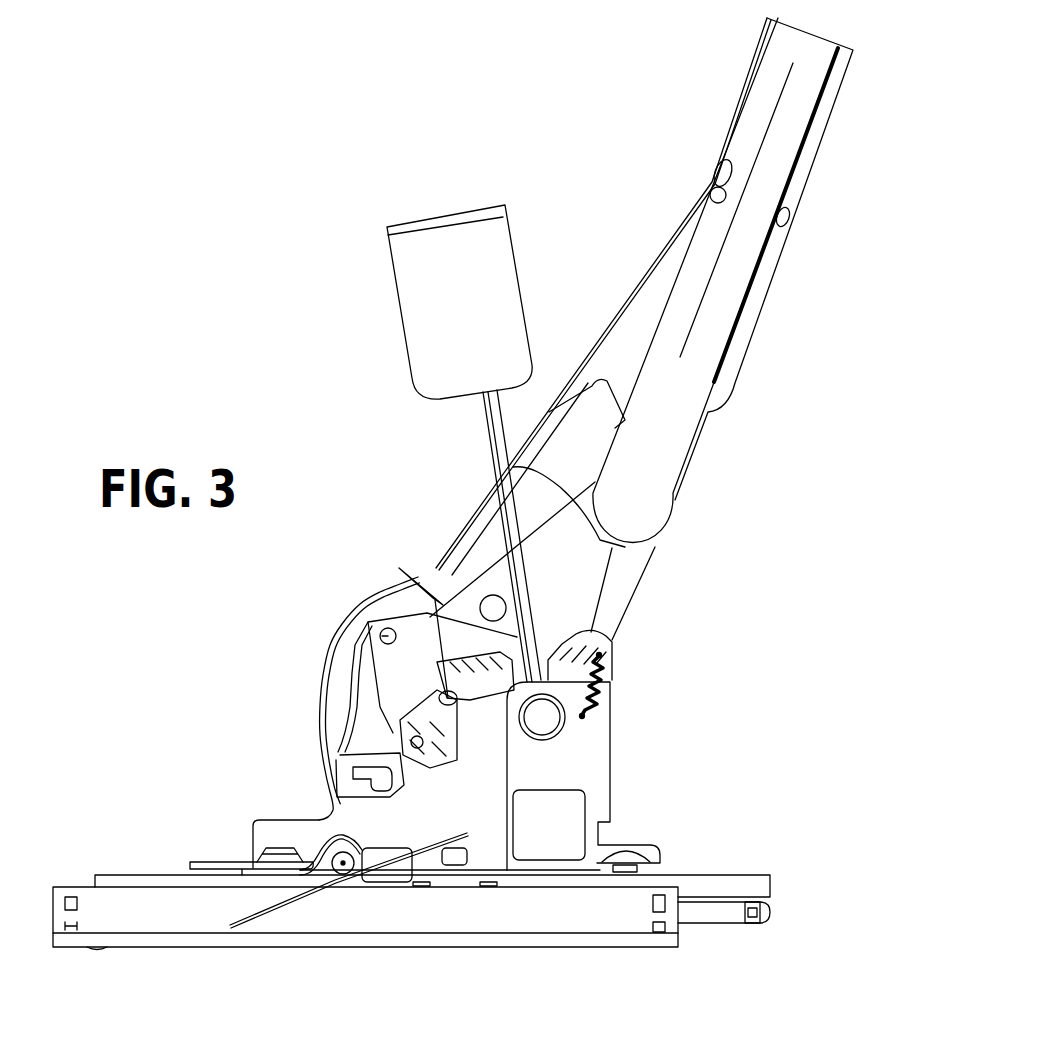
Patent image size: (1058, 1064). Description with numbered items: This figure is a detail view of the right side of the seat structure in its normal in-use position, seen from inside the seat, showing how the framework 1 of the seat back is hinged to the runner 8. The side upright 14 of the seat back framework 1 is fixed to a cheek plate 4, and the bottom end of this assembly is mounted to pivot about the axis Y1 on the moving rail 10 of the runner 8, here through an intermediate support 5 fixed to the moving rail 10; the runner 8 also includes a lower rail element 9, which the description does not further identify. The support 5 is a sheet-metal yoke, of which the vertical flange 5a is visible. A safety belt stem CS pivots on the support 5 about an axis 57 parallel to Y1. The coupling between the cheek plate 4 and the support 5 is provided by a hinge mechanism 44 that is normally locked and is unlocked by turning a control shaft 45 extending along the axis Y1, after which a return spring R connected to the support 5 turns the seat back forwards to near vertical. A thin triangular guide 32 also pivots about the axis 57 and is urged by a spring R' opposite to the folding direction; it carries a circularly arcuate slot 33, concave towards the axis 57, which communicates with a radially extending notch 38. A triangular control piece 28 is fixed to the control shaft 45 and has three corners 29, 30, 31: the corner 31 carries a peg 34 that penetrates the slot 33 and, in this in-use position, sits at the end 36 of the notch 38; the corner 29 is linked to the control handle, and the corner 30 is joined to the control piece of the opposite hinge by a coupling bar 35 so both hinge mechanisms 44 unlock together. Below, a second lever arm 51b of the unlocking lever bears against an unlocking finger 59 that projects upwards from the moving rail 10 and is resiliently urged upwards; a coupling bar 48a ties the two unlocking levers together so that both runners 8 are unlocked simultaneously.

The seat back framework 1 is at (848, 152).
The side upright 14 is at (738, 268).
The cheek plate 4 is at (623, 337).
The safety belt stem CS is at (485, 437).
The return spring R is at (395, 751).
The control piece 28 is at (424, 613).
The control shaft 45 is at (428, 638).
The coupling bar 35 is at (380, 632).
The corner 30 is at (373, 627).
The hinge mechanism 44 is at (362, 658).
The guide 32 is at (430, 715).
The peg 34 is at (411, 739).
The vertical flange 5a is at (288, 832).
The support 5 is at (319, 814).
The runner 8 is at (108, 870).
The lower rail 9 is at (172, 920).
The coupling bar 48a is at (333, 883).
The corner 31 is at (410, 750).
The end of the notch 36 is at (458, 768).
The notch 38 is at (452, 785).
The unlocking finger 59 is at (455, 760).
The second lever arm 51b is at (515, 790).
The circularly arcuate slot 33 is at (462, 717).
The moving rail 10 is at (740, 885).
The pivot axis Y1 is at (450, 700).
The pivot axis 57 is at (545, 717).
The spring R' is at (638, 687).
The corner 29 is at (592, 651).